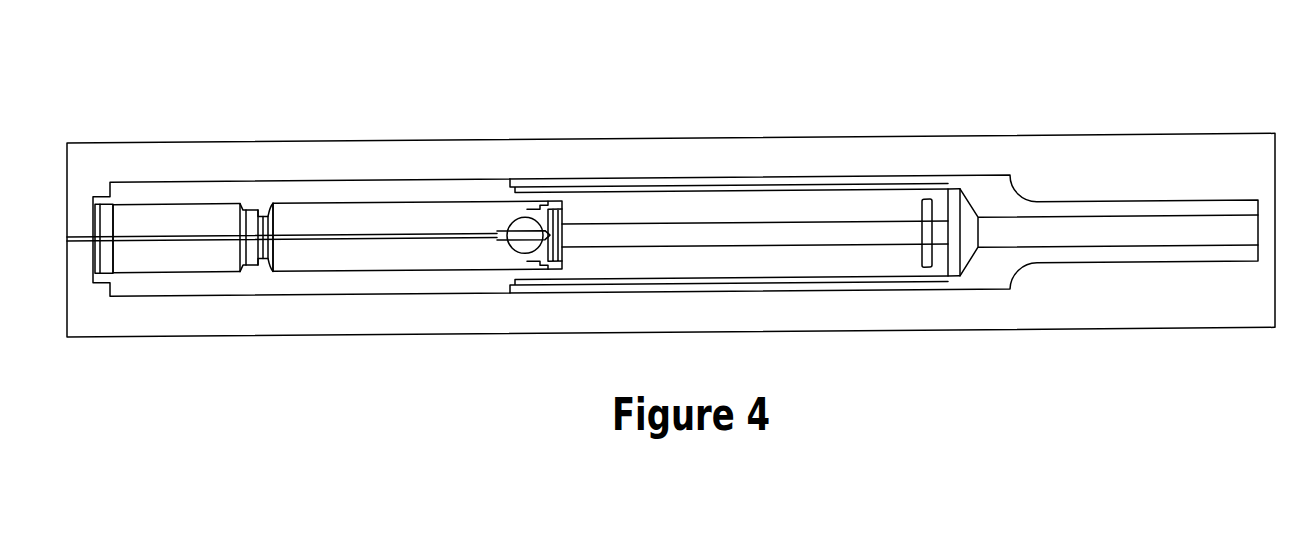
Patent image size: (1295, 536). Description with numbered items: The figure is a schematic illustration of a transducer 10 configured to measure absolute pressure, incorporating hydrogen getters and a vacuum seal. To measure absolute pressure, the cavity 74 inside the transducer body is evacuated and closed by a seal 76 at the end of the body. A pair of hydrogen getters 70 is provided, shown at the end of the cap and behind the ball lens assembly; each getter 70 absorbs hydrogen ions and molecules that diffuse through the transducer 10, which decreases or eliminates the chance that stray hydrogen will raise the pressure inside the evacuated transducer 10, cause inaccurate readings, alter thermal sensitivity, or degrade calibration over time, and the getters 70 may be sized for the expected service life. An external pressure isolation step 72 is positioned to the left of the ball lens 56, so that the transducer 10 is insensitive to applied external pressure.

The transducer 10 is at (560, 88).
The ball lens 56 is at (562, 243).
The hydrogen getter 70 is at (255, 262).
The external pressure isolation step 72 is at (510, 186).
The cavity 74 is at (172, 222).
The seal 76 is at (109, 270).